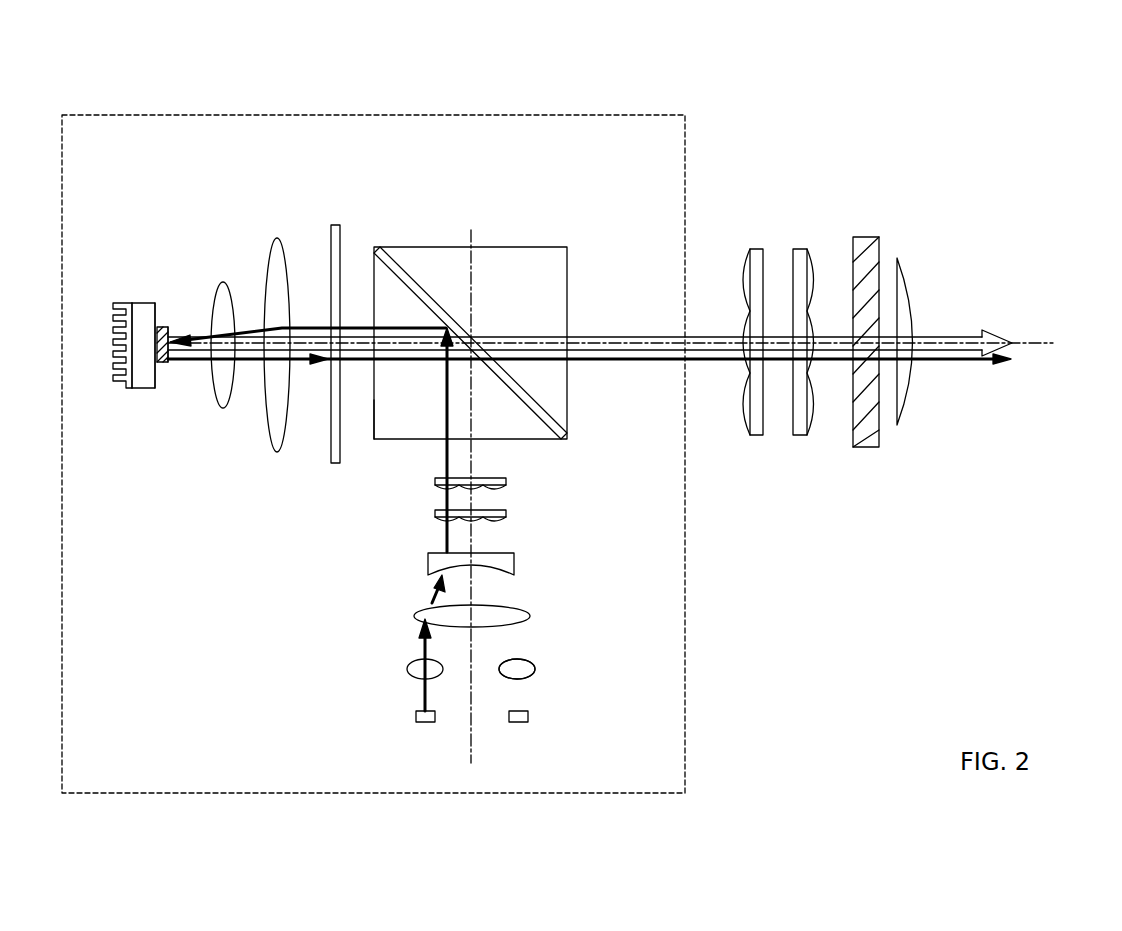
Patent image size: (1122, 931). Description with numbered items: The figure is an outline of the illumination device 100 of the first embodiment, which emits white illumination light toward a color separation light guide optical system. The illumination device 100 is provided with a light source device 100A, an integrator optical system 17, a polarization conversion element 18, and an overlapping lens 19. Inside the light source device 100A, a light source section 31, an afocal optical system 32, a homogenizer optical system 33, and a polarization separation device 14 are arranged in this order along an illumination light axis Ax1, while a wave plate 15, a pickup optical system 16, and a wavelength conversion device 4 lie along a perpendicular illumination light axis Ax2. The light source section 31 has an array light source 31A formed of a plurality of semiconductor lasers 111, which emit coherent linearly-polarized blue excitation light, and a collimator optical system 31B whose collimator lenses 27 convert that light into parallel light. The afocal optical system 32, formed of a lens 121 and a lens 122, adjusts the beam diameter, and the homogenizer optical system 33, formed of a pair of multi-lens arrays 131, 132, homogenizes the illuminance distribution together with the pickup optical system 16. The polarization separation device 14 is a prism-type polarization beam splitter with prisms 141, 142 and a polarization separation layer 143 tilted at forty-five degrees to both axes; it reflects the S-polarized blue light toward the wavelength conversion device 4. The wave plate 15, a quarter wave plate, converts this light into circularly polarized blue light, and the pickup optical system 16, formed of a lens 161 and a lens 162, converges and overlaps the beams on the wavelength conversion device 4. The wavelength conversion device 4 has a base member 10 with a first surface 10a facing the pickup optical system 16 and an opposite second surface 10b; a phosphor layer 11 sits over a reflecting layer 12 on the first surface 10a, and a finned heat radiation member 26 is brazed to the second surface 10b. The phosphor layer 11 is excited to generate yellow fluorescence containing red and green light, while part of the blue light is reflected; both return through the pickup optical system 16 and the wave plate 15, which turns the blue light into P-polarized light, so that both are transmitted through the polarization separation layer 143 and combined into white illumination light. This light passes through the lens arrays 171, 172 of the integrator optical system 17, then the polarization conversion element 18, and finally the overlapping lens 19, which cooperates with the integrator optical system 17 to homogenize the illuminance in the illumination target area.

The illumination device 100 is at (812, 72).
The light source device 100A is at (589, 115).
The wavelength conversion device 4 is at (136, 238).
The base member 10 is at (148, 388).
The first surface 10a is at (157, 310).
The second surface 10b is at (118, 303).
The heat radiation member 26 is at (117, 390).
The reflecting layer 12 is at (165, 365).
The phosphor layer 11 is at (175, 360).
The pickup optical system 16 is at (272, 186).
The lens 162 is at (223, 282).
The lens 161 is at (275, 238).
The wave plate 15 is at (336, 225).
The polarization separation device 14 is at (572, 226).
The prism 142 is at (527, 260).
The polarization separation layer 143 is at (432, 305).
The prism 141 is at (390, 422).
The homogenizer optical system 33 is at (580, 465).
The multi-lens array 132 is at (506, 481).
The multi-lens array 131 is at (506, 516).
The afocal optical system 32 is at (593, 556).
The lens 122 is at (514, 558).
The lens 121 is at (530, 612).
The collimator lens 27 is at (442, 664).
The light source section 31 is at (637, 672).
The array light source 31A is at (546, 718).
The collimator optical system 31B is at (548, 674).
The semiconductor laser 111 is at (509, 720).
The integrator optical system 17 is at (833, 166).
The lens array 171 is at (752, 250).
The lens array 172 is at (800, 250).
The polarization conversion element 18 is at (862, 248).
The overlapping lens 19 is at (908, 270).
The illumination light axis Ax1 is at (471, 752).
The illumination light axis Ax2 is at (1048, 343).